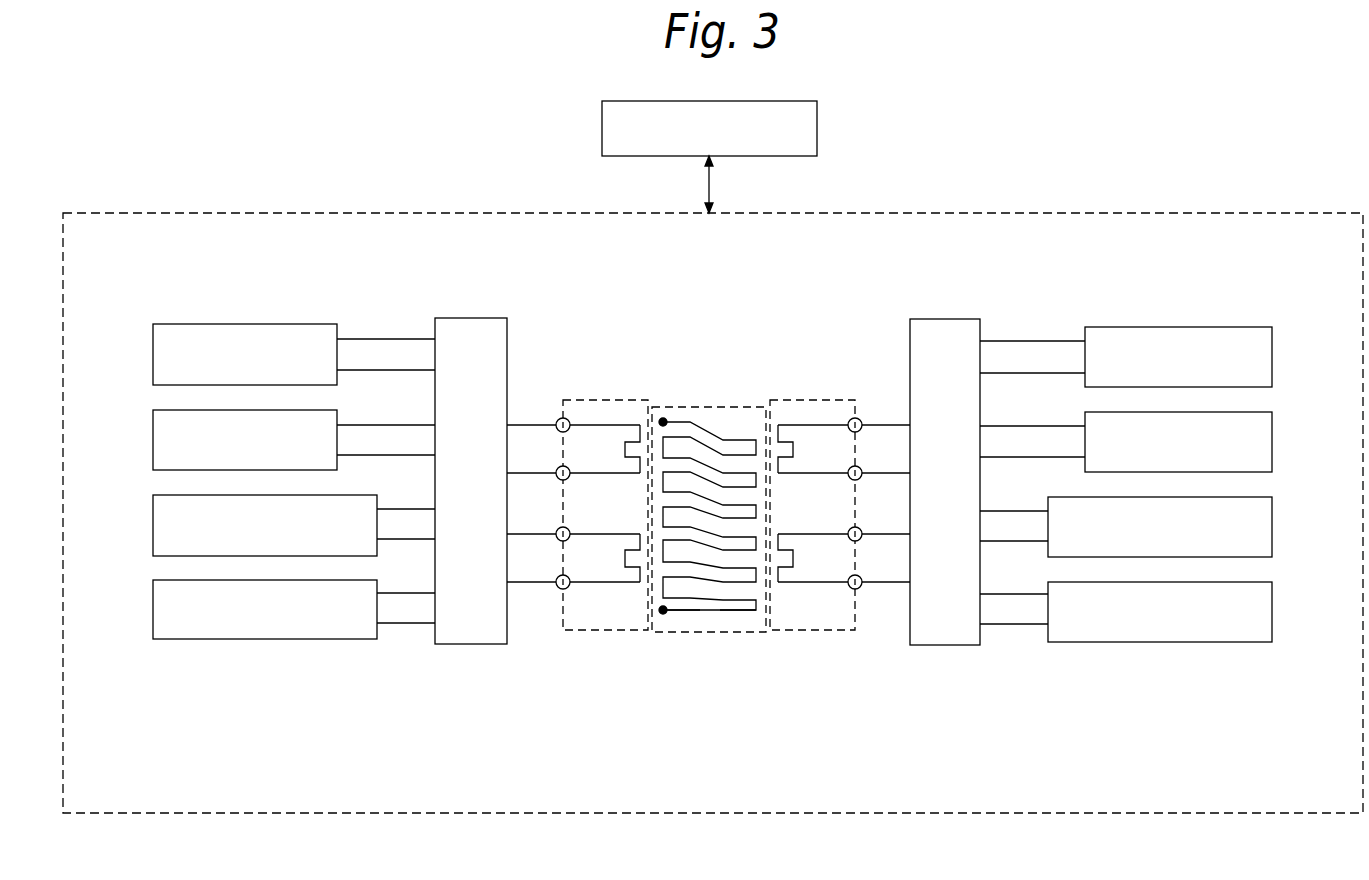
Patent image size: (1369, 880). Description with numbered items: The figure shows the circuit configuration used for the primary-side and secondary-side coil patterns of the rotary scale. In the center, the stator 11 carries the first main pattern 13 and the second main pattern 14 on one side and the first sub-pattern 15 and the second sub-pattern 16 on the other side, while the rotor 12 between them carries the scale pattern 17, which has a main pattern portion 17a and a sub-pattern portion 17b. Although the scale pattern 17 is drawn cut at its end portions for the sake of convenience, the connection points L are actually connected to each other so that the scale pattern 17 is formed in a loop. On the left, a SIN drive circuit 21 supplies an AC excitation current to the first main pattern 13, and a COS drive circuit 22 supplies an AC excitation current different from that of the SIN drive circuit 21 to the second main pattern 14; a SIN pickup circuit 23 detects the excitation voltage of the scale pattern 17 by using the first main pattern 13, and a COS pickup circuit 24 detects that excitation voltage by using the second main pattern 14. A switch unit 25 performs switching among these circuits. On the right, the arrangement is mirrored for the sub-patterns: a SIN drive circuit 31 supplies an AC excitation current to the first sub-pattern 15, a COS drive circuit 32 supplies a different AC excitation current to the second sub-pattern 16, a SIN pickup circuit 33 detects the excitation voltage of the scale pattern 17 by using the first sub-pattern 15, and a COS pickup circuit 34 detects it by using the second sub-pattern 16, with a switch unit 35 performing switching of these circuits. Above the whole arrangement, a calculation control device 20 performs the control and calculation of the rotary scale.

The stator 11 is at (626, 400).
The rotor 12 is at (720, 407).
The first main pattern 13 is at (605, 425).
The second main pattern 14 is at (620, 582).
The first sub-pattern 15 is at (823, 425).
The second sub-pattern 16 is at (822, 582).
The scale pattern 17 is at (765, 747).
The main pattern portion 17a is at (673, 628).
The sub-pattern portion 17b is at (740, 628).
The connection points L is at (663, 421).
The calculation control device 20 is at (818, 125).
The SIN drive circuit 21 is at (153, 358).
The COS drive circuit 22 is at (153, 441).
The SIN pickup circuit 23 is at (153, 526).
The COS pickup circuit 24 is at (153, 609).
The switch unit 25 is at (478, 318).
The SIN drive circuit 31 is at (1272, 357).
The COS drive circuit 32 is at (1272, 438).
The SIN pickup circuit 33 is at (1272, 525).
The COS pickup circuit 34 is at (1272, 608).
The switch unit 35 is at (948, 319).